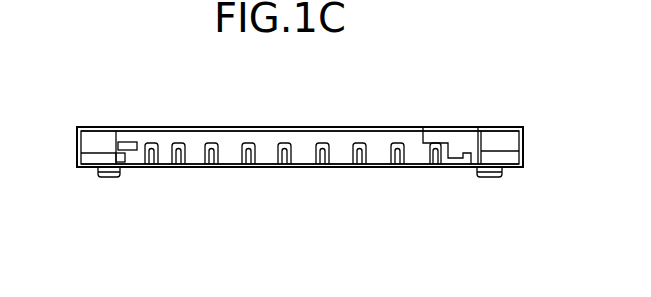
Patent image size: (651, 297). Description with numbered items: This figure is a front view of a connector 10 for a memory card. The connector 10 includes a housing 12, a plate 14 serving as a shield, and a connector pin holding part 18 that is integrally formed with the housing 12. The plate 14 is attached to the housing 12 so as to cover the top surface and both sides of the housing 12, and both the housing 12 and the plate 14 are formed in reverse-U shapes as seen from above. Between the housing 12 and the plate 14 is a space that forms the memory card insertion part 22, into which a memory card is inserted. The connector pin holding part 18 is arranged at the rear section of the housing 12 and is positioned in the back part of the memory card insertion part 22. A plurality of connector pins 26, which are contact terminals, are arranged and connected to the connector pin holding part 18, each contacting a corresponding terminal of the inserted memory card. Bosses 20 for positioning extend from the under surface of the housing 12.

The connector 10 is at (420, 94).
The housing 12 is at (381, 176).
The plate 14 is at (473, 127).
The connector pin holding part 18 is at (273, 170).
The bosses 20 is at (105, 177).
The memory card insertion part 22 is at (302, 130).
The connector pins 26 is at (151, 167).